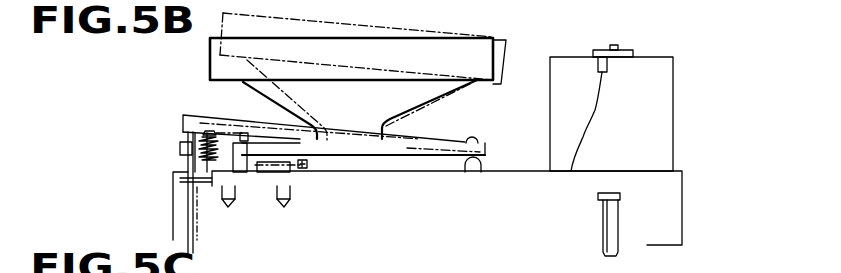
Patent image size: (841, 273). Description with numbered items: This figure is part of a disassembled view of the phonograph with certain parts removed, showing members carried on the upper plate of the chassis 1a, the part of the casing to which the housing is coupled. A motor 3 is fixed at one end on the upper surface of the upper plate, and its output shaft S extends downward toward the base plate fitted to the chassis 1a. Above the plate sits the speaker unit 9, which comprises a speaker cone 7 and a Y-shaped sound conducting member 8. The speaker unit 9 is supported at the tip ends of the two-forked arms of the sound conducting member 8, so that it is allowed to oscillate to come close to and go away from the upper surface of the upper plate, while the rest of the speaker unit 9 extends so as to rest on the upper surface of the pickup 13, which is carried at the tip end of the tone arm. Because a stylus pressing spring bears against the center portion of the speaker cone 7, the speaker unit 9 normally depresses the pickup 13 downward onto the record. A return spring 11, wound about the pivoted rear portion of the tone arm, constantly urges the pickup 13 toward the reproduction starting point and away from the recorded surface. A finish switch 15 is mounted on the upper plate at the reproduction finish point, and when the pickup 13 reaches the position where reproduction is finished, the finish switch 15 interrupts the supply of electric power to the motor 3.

The chassis 1a is at (683, 203).
The motor 3 is at (647, 77).
The speaker cone 7 is at (362, 115).
The Y-shaped sound conducting member 8 is at (180, 144).
The speaker unit 9 is at (447, 70).
The return spring 11 is at (227, 133).
The pickup 13 is at (228, 199).
The finish switch 15 is at (306, 166).
The output shaft S is at (620, 246).